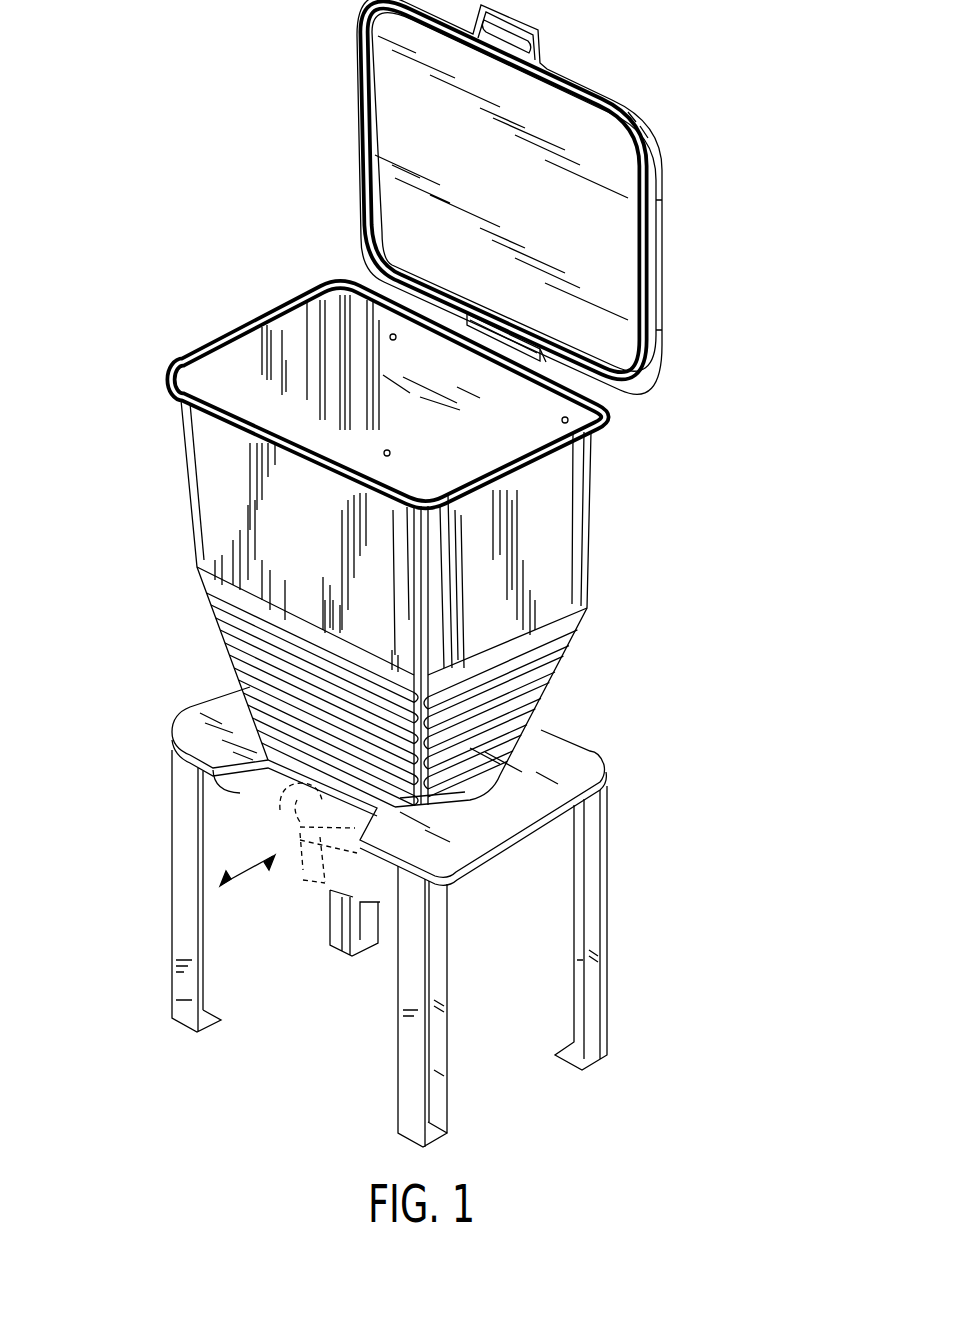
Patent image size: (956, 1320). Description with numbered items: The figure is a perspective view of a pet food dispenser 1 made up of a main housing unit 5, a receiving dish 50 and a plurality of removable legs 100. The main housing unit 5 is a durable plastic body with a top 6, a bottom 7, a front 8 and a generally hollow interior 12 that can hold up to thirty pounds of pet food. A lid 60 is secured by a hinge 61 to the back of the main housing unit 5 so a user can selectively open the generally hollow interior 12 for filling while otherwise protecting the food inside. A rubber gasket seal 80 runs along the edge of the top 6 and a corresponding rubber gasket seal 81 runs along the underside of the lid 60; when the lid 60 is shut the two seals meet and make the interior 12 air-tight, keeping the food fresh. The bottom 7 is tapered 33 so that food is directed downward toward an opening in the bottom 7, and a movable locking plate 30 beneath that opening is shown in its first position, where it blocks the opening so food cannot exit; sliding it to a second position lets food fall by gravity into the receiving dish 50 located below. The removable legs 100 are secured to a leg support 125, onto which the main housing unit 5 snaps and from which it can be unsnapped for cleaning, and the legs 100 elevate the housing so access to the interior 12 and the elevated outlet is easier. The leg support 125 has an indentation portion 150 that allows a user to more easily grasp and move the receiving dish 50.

The pet food dispenser 1 is at (151, 226).
The main housing unit 5 is at (558, 547).
The top 6 is at (248, 334).
The bottom 7 is at (518, 757).
The front 8 is at (218, 542).
The generally hollow interior 12 is at (515, 430).
The movable locking plate 30 is at (497, 851).
The tapered bottom 33 is at (537, 682).
The receiving dish 50 is at (308, 867).
The lid 60 is at (610, 242).
The hinge 61 is at (466, 316).
The rubber gasket seal 80 is at (314, 296).
The rubber gasket seal 81 is at (358, 139).
The removable legs 100 is at (595, 923).
The leg support 125 is at (582, 770).
The indentation portion 150 is at (238, 794).